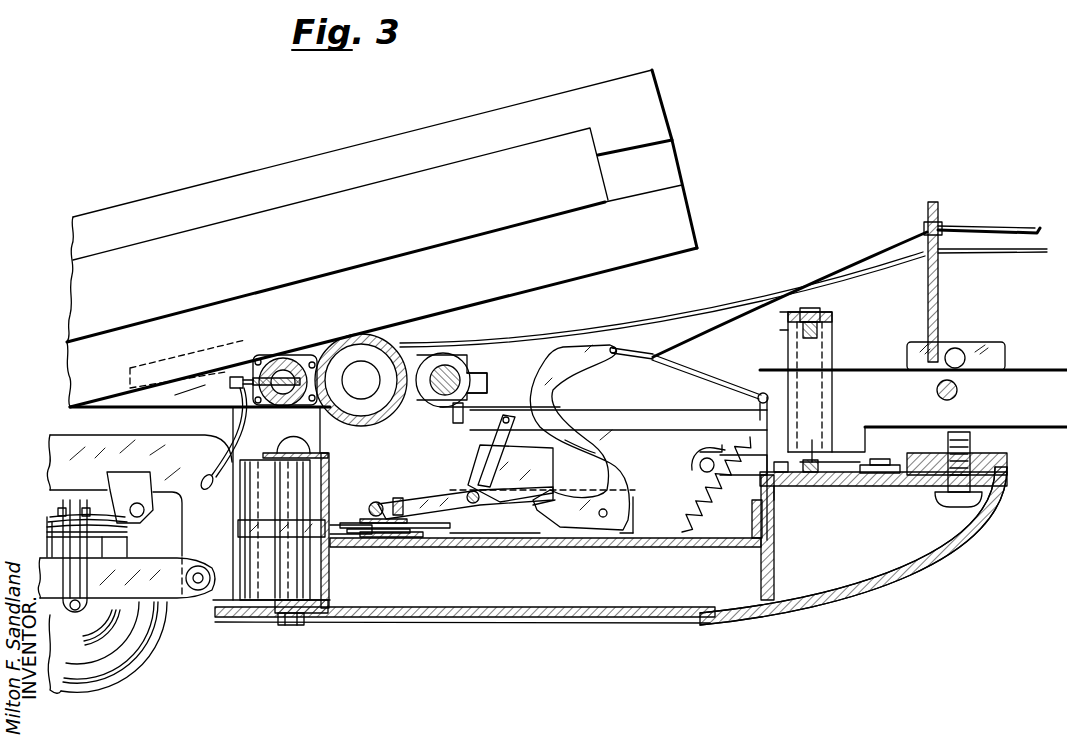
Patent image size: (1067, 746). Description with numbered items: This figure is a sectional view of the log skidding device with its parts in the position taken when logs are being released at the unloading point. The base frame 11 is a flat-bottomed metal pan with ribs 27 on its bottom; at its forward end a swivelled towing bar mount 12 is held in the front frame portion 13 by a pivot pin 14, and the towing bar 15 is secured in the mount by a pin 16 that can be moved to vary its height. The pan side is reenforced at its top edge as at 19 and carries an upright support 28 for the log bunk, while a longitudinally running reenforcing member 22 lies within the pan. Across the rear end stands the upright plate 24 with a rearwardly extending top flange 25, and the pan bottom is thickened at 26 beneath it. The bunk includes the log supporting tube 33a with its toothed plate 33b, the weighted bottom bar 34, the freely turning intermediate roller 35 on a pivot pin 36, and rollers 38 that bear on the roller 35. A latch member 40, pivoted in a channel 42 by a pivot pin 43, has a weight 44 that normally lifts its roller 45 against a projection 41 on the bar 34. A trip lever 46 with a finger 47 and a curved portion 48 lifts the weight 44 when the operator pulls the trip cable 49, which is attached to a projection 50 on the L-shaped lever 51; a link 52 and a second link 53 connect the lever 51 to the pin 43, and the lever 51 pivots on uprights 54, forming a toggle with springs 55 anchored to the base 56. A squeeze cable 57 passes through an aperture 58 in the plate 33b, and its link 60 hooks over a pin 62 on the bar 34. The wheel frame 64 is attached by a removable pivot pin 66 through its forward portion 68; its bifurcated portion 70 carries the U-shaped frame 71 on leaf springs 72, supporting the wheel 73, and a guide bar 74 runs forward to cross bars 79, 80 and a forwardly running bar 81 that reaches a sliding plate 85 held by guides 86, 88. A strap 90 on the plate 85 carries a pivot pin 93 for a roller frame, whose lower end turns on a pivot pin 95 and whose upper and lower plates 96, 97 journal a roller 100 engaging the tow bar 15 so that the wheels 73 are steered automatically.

The base frame 11 is at (668, 624).
The towing bar mount 12 is at (1008, 455).
The front frame portion 13 is at (898, 490).
The pivot pin 14 is at (952, 495).
The towing bar 15 is at (1030, 378).
The pin 16 is at (960, 392).
The reenforcement 19 is at (778, 420).
The reenforcing member 22 is at (625, 550).
The upright plate 24 is at (332, 600).
The top flange 25 is at (266, 458).
The thickened portion 26 is at (285, 625).
The ribs 27 is at (500, 623).
The upright support 28 is at (435, 355).
The tube 33a is at (270, 376).
The toothed plate 33b is at (232, 376).
The bottom bar 34 is at (460, 365).
The intermediate roller 35 is at (340, 345).
The pivot pin 36 is at (366, 375).
The rollers 38 is at (292, 358).
The latch member 40 is at (410, 495).
The projection 41 is at (489, 378).
The channel 42 is at (575, 548).
The pivot pin 43 is at (467, 493).
The weight 44 is at (548, 472).
The roller 45 is at (371, 503).
The trip lever 46 is at (556, 378).
The finger 47 is at (540, 520).
The curved portion 48 is at (572, 432).
The trip cable 49 is at (915, 258).
The projection 50 is at (755, 398).
The L-shaped lever 51 is at (700, 448).
The link 52 is at (636, 410).
The second link 53 is at (478, 455).
The uprights 54 is at (698, 470).
The springs 55 is at (680, 522).
The base 56 is at (725, 540).
The squeeze cable 57 is at (770, 302).
The aperture 58 is at (235, 395).
The link 60 is at (200, 478).
The pin 62 is at (452, 420).
The wheel frame 64 is at (255, 590).
The removable pivot pin 66 is at (294, 450).
The forward portion 68 is at (275, 608).
The bifurcated portion 70 is at (68, 440).
The wheel mounting U-shaped frame 71 is at (170, 557).
The leaf springs 72 is at (55, 520).
The wheel 73 is at (128, 680).
The bar 74 is at (335, 540).
The cross bar 79 is at (360, 523).
The cross bar 80 is at (372, 538).
The forwardly running bar 81 is at (870, 466).
The plate 85 is at (850, 490).
The guide 86 is at (882, 478).
The guide 88 is at (778, 510).
The strap 90 is at (822, 313).
The pivot pin 93 is at (780, 322).
The pivot pin 95 is at (810, 490).
The upper plate 96 is at (820, 328).
The lower plate 97 is at (814, 455).
The roller 100 is at (825, 352).